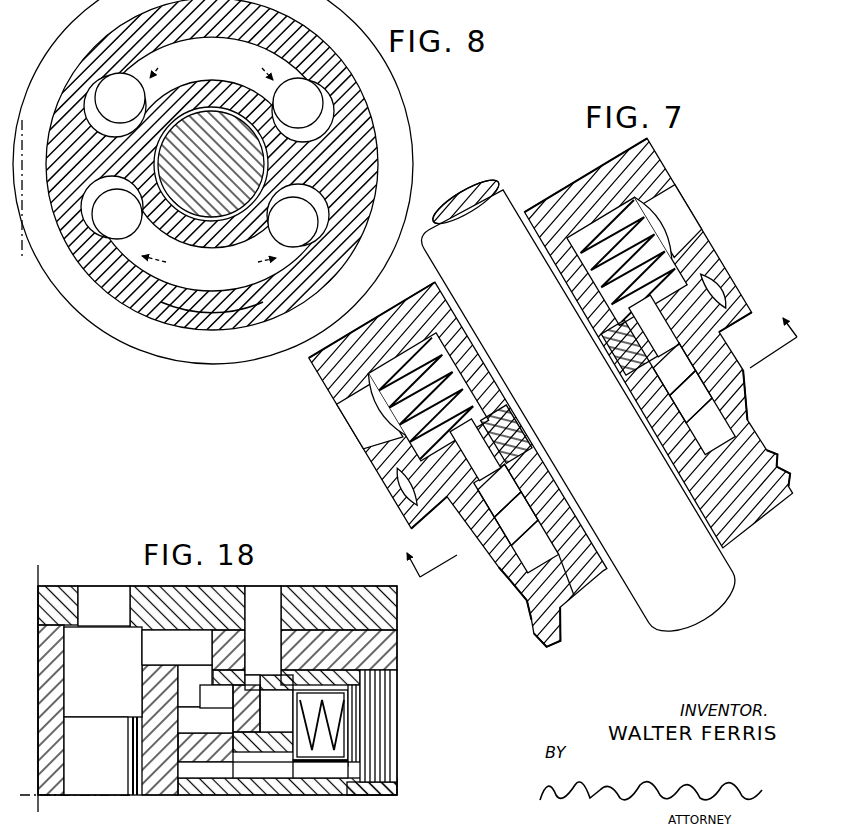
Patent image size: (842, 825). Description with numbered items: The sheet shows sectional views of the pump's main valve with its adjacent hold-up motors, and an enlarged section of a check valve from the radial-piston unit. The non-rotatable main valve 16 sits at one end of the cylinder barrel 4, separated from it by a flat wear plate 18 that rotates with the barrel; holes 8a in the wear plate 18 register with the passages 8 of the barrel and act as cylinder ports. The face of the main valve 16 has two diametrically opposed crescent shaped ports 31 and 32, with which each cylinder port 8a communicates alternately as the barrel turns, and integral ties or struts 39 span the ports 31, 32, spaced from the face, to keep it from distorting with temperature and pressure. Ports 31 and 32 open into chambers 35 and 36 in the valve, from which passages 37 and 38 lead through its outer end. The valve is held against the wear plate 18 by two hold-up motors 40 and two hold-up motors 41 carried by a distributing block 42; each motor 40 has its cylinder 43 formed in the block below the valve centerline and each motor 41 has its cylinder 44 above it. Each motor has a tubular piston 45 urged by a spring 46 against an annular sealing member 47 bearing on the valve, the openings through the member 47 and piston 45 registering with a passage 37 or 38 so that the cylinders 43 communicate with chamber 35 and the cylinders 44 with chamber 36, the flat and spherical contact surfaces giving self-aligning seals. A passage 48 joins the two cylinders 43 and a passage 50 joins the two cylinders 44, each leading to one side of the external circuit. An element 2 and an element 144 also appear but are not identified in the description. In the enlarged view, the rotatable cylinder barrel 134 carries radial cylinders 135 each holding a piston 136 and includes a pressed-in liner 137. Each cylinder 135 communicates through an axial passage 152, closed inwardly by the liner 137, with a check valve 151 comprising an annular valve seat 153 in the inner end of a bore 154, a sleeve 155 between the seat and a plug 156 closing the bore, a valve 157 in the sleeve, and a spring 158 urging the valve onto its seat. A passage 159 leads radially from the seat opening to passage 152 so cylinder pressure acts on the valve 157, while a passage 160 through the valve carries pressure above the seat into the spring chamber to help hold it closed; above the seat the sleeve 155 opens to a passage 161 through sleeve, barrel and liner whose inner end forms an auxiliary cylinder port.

In FIG. 8, the shaft 2 is at (218, 195).
In FIG. 7, the shaft 2 is at (480, 256).
In FIG. 7, the cylinder barrel 4 is at (536, 636).
In FIG. 7, the passages 8 is at (788, 518).
In FIG. 7, the holes 8a is at (752, 456).
In FIG. 8, the main valve 16 is at (178, 318).
In FIG. 7, the main valve 16 is at (672, 443).
In FIG. 7, the wear plate 18 is at (768, 460).
In FIG. 7, the port 31 is at (540, 578).
In FIG. 7, the port 32 is at (752, 432).
In FIG. 8, the chamber 35 is at (228, 292).
In FIG. 7, the chamber 35 is at (541, 540).
In FIG. 8, the chamber 36 is at (150, 52).
In FIG. 7, the chamber 36 is at (715, 430).
In FIG. 8, the passage 37 is at (128, 224).
In FIG. 7, the passage 37 is at (511, 515).
In FIG. 8, the passage 38 is at (131, 108).
In FIG. 7, the passage 38 is at (709, 395).
In FIG. 7, the ties or struts 39 is at (510, 563).
In FIG. 8, the hold-up motor 40 is at (205, 225).
In FIG. 7, the hold-up motor 40 is at (388, 480).
In FIG. 8, the hold-up motor 41 is at (209, 95).
In FIG. 7, the hold-up motor 41 is at (700, 292).
In FIG. 8, the distributing block 42 is at (102, 318).
In FIG. 7, the distributing block 42 is at (577, 203).
In FIG. 7, the cylinder 43 is at (447, 353).
In FIG. 7, the cylinder 44 is at (592, 272).
In FIG. 7, the tubular piston 45 is at (618, 354).
In FIG. 7, the spring 46 is at (592, 304).
In FIG. 7, the annular sealing member 47 is at (444, 512).
In FIG. 7, the passage 48 is at (368, 442).
In FIG. 7, the passage 50 is at (688, 222).
In FIG. 18, the cylinder barrel 134 is at (397, 642).
In FIG. 18, the radial cylinder 135 is at (77, 698).
In FIG. 18, the piston 136 is at (102, 750).
In FIG. 18, the liner 137 is at (323, 607).
In FIG. 18, the passage 144 is at (113, 596).
In FIG. 18, the check valve 151 is at (414, 688).
In FIG. 18, the axial passage 152 is at (160, 655).
In FIG. 18, the annular valve seat 153 is at (186, 778).
In FIG. 18, the bore 154 is at (243, 775).
In FIG. 18, the sleeve 155 is at (296, 775).
In FIG. 18, the plug 156 is at (390, 765).
In FIG. 18, the valve 157 is at (322, 768).
In FIG. 18, the spring 158 is at (352, 740).
In FIG. 18, the passage 159 is at (198, 698).
In FIG. 18, the passage 160 is at (290, 726).
In FIG. 18, the passage 161 is at (267, 605).